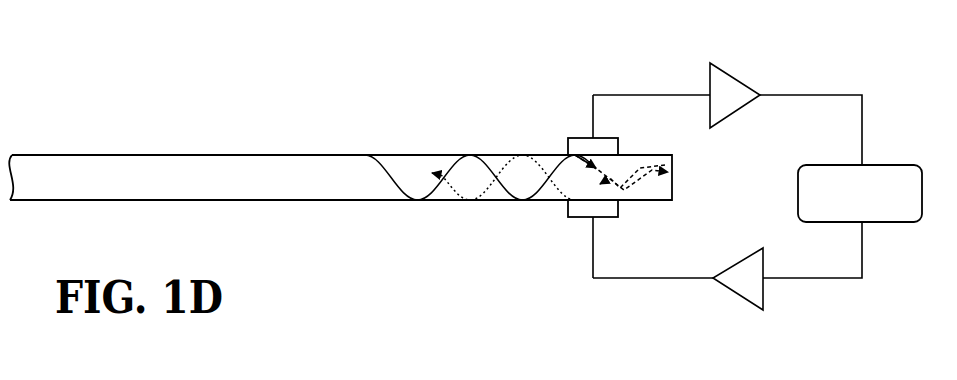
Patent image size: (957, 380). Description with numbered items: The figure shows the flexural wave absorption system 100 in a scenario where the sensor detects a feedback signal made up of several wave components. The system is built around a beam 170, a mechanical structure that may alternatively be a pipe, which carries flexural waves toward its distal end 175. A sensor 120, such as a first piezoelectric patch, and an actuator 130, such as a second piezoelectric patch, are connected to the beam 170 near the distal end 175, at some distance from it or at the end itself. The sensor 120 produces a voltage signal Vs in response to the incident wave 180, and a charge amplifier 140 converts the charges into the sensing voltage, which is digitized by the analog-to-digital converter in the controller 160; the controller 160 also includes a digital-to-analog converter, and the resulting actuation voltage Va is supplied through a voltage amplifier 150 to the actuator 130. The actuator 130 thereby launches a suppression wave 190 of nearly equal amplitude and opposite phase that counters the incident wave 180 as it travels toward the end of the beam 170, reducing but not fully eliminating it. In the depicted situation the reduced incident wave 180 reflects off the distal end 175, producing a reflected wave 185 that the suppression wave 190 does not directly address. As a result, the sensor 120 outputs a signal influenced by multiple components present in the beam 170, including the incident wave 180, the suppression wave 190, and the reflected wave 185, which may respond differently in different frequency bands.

The flexural wave absorption system 100 is at (748, 194).
The sensor 120 is at (578, 138).
The actuator 130 is at (578, 217).
The charge amplifier 140 is at (737, 77).
The voltage amplifier 150 is at (741, 296).
The controller 160 is at (878, 203).
The beam 170 is at (206, 155).
The distal end 175 is at (674, 175).
The incident wave 180 is at (443, 155).
The reflected wave 185 is at (660, 201).
The suppression wave 190 is at (447, 200).